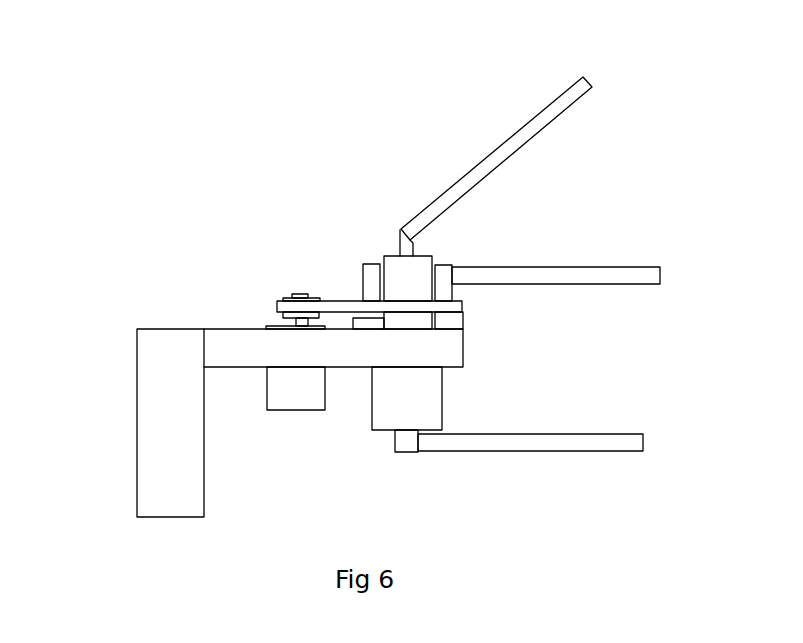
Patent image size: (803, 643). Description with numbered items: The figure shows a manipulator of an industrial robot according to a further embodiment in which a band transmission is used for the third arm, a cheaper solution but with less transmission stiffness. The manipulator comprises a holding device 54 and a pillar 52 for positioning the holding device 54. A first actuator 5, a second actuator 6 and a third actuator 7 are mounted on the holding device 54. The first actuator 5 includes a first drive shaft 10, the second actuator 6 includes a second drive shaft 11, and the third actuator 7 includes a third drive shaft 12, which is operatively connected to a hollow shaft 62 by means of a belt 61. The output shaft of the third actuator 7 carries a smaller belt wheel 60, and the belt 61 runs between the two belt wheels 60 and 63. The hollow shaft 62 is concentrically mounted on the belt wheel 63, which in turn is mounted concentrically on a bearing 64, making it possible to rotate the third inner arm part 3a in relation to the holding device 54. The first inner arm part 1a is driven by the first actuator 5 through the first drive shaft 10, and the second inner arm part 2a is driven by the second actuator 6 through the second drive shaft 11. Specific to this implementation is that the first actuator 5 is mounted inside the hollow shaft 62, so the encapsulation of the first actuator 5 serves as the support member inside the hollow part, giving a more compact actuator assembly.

The first inner arm part 1a is at (542, 117).
The second inner arm part 2a is at (532, 445).
The third inner arm part 3a is at (587, 278).
The first actuator 5 is at (397, 268).
The second actuator 6 is at (428, 400).
The third actuator 7 is at (295, 403).
The first drive shaft 10 is at (411, 243).
The second drive shaft 11 is at (408, 451).
The third drive shaft 12 is at (290, 323).
The pillar 52 is at (170, 432).
The holding device 54 is at (237, 348).
The belt wheel 60 is at (283, 297).
The belt 61 is at (328, 300).
The hollow shaft 62 is at (363, 268).
The belt wheel 63 is at (460, 295).
The bearing 64 is at (460, 324).